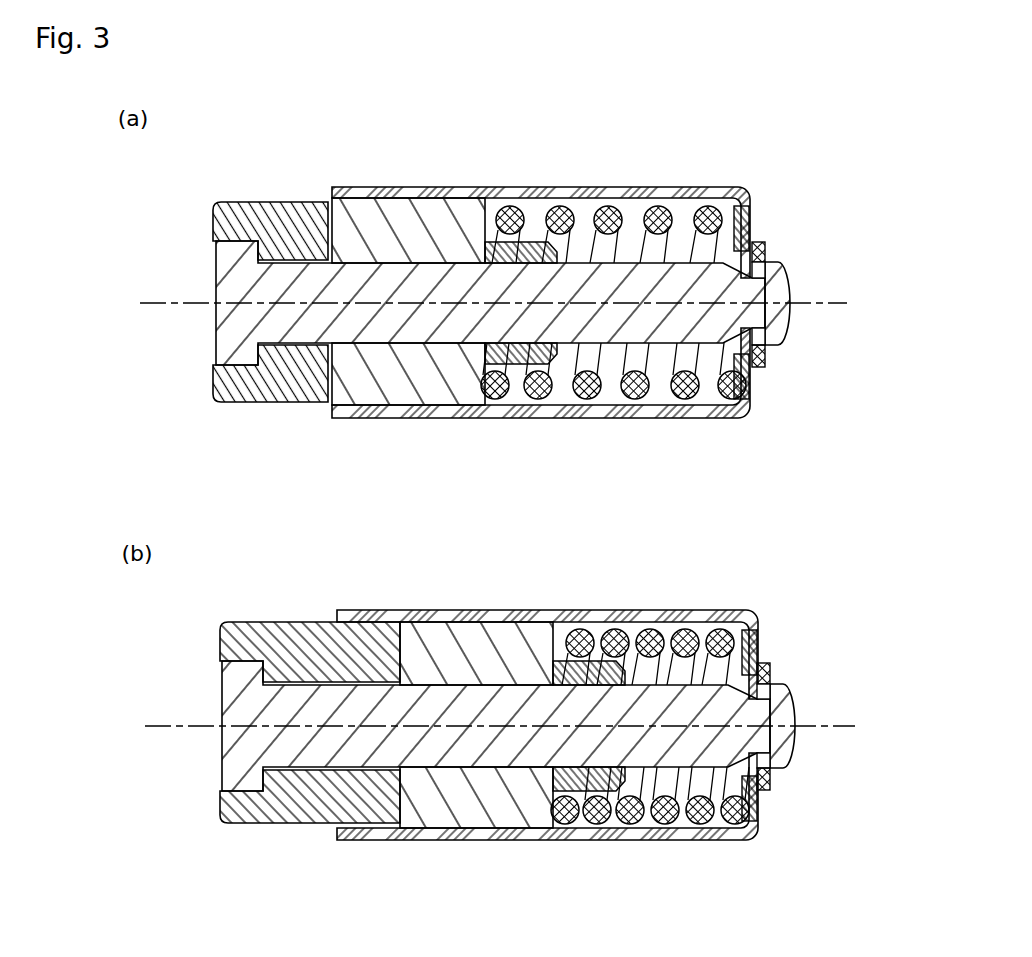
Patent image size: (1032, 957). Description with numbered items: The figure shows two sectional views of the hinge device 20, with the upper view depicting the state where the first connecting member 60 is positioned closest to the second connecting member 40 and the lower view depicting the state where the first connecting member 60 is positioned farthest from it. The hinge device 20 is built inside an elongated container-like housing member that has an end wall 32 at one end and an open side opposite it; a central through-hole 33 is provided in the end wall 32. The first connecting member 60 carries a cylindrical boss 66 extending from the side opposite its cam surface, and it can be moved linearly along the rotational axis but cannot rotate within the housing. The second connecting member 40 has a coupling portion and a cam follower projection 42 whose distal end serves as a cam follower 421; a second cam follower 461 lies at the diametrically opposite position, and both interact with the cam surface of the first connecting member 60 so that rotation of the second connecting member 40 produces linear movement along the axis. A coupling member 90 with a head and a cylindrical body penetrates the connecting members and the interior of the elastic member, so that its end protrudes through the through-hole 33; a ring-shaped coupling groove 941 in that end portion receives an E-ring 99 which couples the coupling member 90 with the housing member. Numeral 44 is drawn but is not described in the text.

The hinge device 20 is at (718, 165).
The second connecting member 40 is at (277, 201).
The first connecting member 60 is at (426, 236).
The cylindrical boss 66 is at (520, 252).
The end wall 32 is at (750, 215).
The through-hole 33 is at (765, 247).
The coupling groove 941 is at (768, 263).
The E-ring 99 is at (765, 366).
The coupling member 90 is at (387, 318).
The cam follower projection 42 is at (358, 645).
The cam follower 421 is at (408, 650).
The cap lower wall 44 is at (401, 803).
The cam follower 461 is at (440, 812).